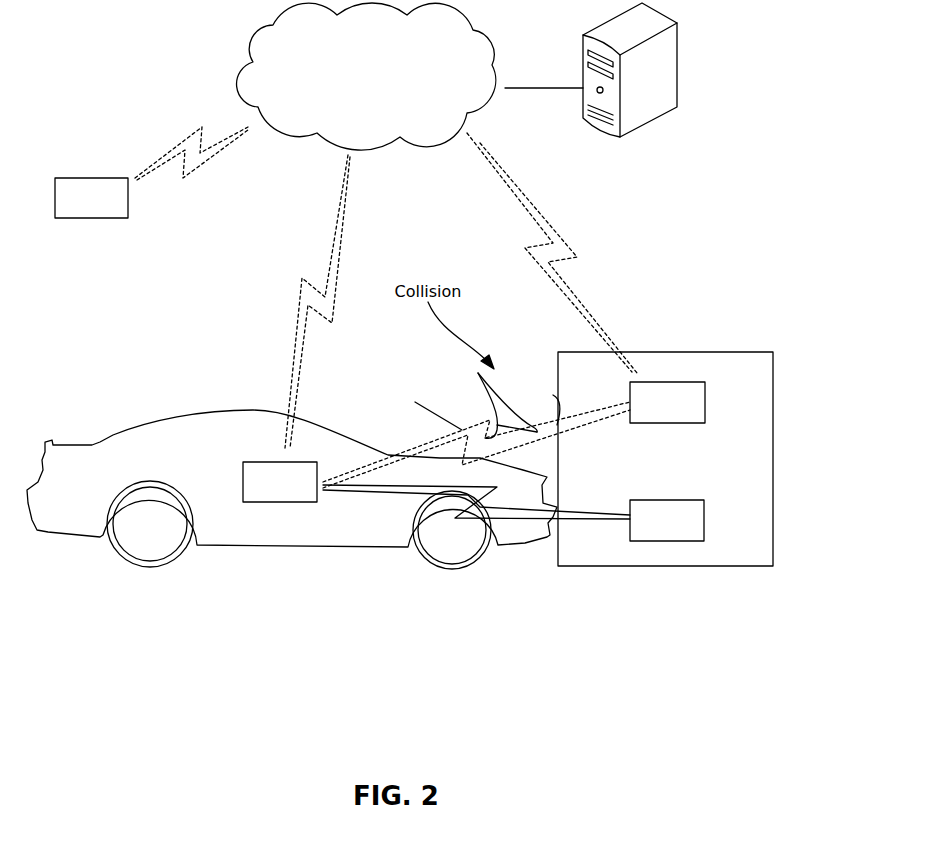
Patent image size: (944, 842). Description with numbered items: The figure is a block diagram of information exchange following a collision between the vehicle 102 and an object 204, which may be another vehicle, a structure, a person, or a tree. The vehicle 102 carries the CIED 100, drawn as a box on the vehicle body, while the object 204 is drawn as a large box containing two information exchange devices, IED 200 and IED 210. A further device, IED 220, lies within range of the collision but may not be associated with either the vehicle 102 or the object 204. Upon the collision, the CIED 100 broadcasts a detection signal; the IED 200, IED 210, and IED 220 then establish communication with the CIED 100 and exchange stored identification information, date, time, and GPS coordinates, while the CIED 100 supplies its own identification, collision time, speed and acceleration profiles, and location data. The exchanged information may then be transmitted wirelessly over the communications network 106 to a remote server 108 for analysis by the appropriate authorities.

The CIED 100 is at (268, 502).
The vehicle 102 is at (113, 435).
The communications network 106 is at (366, 76).
The remote server 108 is at (660, 112).
The IED 200 is at (675, 541).
The object 204 is at (655, 352).
The IED 210 is at (693, 382).
The IED 220 is at (90, 178).